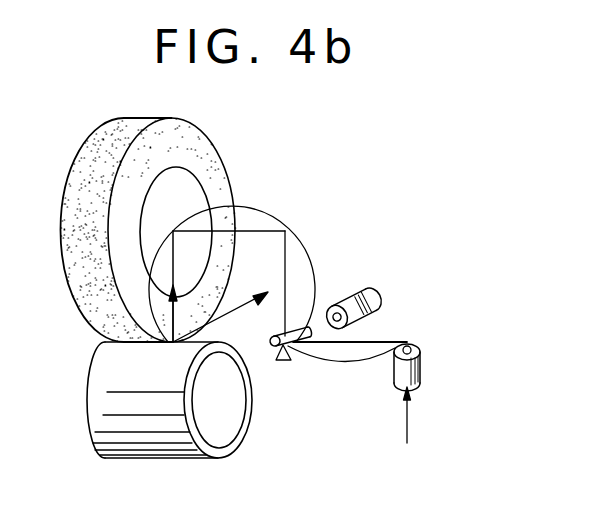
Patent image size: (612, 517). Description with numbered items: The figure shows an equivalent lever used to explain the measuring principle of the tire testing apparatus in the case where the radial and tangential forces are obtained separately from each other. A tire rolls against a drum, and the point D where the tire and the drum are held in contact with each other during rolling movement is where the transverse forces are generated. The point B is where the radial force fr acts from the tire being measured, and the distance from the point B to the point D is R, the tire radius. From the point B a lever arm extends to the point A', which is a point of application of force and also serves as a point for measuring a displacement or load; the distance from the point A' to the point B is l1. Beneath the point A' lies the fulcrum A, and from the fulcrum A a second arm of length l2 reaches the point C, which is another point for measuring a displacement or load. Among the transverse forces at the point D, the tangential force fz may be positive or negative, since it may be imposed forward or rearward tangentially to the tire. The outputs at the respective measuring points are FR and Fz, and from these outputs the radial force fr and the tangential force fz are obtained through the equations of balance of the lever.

The distance from point B to point D R is at (148, 230).
The point of force application B is at (176, 232).
The tire-drum contact point D is at (169, 400).
The distance from point A' to point B l1 is at (229, 207).
The point of application of force A' is at (296, 271).
The distance from point A to point C l2 is at (347, 330).
The radial force fr is at (178, 286).
The tangential force fz is at (220, 304).
The fulcrum A is at (291, 357).
The output at measuring point for tangential force Fz is at (378, 305).
The point for measuring a displacement C is at (408, 353).
The output at measuring point for radial force FR is at (406, 429).